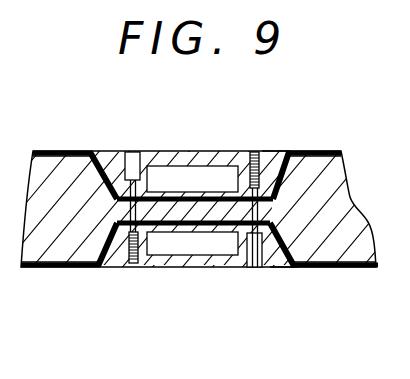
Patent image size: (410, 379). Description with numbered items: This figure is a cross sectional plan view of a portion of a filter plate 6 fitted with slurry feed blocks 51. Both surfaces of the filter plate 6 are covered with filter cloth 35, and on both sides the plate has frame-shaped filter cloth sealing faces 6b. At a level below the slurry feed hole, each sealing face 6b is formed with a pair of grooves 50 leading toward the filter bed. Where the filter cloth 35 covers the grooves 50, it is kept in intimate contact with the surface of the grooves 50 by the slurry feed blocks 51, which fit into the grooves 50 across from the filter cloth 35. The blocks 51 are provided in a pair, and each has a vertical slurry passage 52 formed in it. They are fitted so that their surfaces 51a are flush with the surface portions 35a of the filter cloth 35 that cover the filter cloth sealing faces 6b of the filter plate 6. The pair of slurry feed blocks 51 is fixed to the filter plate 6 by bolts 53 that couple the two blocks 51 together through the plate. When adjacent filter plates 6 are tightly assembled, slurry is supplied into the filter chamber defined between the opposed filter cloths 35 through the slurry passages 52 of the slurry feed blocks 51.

The filter plate 6 is at (347, 230).
The filter cloth sealing face 6b is at (52, 150).
The filter cloth 35 is at (338, 150).
The surface portion of the filter cloth 35a is at (83, 150).
The groove 50 is at (212, 178).
The slurry feed block 51 is at (178, 158).
The surface of the slurry feed block 51a is at (272, 148).
The vertical slurry passage 52 is at (198, 197).
The bolt 53 is at (137, 266).